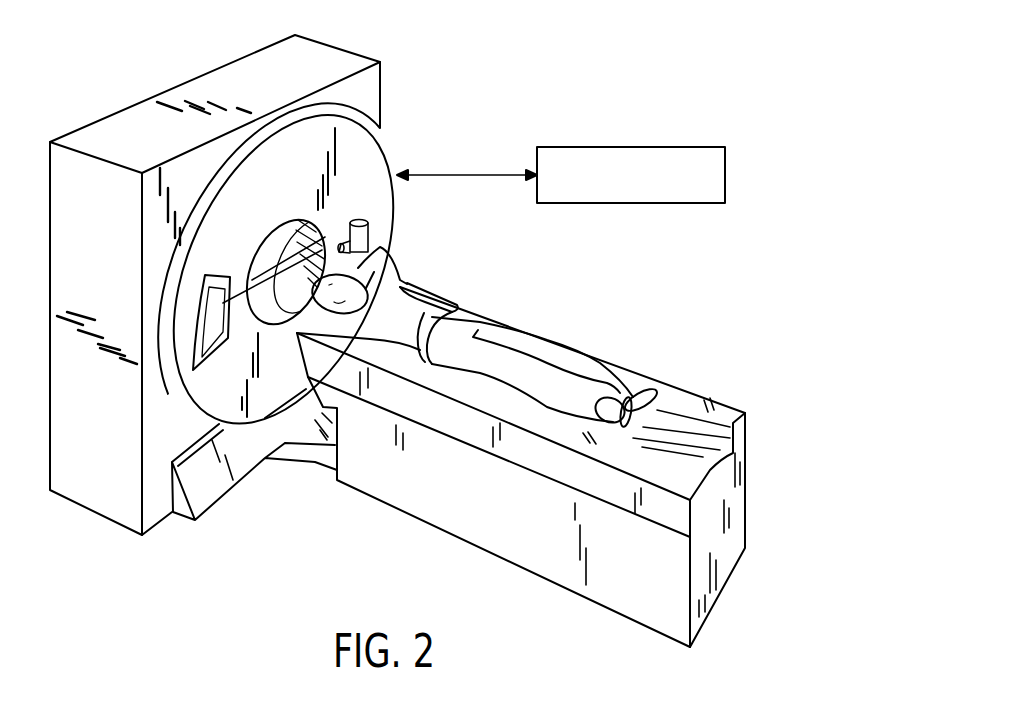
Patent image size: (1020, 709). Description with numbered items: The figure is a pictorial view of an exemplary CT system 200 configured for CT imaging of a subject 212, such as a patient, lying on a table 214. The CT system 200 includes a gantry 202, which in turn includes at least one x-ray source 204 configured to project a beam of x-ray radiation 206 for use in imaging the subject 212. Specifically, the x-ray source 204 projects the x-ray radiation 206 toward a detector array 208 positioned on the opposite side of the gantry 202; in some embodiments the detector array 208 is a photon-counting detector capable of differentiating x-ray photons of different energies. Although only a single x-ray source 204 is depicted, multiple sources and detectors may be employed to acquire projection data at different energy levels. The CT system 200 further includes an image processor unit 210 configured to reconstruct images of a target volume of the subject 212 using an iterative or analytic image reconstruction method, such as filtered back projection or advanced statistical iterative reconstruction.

The CT system 200 is at (657, 41).
The gantry 202 is at (317, 60).
The x-ray source 204 is at (370, 238).
The x-ray radiation 206 is at (260, 287).
The detector array 208 is at (213, 350).
The image processor unit 210 is at (683, 147).
The subject 212 is at (410, 300).
The table 214 is at (710, 406).